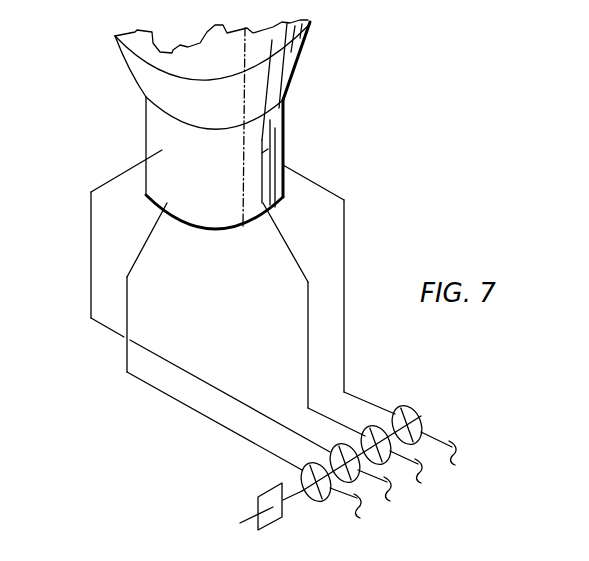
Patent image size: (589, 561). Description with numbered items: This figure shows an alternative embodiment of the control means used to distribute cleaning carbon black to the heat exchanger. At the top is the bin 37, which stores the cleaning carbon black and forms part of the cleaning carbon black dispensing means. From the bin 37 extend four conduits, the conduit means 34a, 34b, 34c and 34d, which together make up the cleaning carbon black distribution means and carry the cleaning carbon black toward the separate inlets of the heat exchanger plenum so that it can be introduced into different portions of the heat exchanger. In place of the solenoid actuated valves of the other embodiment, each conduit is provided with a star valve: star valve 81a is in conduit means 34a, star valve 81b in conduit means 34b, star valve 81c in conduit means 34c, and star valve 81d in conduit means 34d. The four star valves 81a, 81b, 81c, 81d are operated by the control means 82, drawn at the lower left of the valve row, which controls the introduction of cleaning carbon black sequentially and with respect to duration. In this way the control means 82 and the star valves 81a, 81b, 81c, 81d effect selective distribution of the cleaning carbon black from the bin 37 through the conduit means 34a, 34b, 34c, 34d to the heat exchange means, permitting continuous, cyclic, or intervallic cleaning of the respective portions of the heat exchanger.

The bin 37 is at (304, 50).
The conduit means 34a is at (137, 262).
The conduit means 34b is at (292, 257).
The conduit means 34c is at (327, 190).
The conduit means 34d is at (91, 217).
The star valve 81a is at (302, 481).
The star valve 81b is at (369, 424).
The star valve 81c is at (404, 407).
The star valve 81d is at (332, 450).
The control means 82 is at (257, 503).